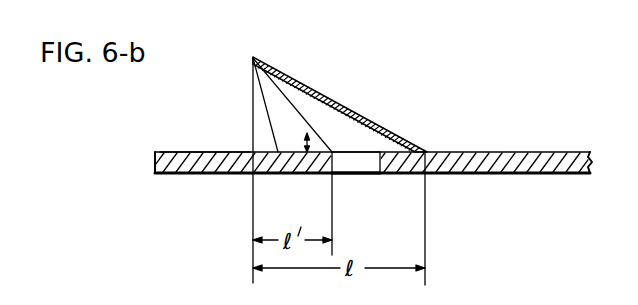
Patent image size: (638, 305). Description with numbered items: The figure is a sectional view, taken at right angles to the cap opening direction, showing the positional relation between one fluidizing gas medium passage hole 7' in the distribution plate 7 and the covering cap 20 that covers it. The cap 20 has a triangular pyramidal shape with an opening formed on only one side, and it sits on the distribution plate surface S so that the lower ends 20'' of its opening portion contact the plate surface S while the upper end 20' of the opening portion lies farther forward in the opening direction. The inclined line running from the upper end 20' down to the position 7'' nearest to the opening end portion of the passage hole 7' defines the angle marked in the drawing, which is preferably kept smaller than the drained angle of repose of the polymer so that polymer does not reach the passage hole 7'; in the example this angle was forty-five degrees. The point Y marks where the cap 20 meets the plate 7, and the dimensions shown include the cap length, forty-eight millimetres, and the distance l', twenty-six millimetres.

The distribution plate 7 is at (351, 164).
The fluidizing gas medium passage hole 7' is at (367, 195).
The position nearest to the opening end portion of the passage hole 7'' is at (363, 127).
The covering cap 20 is at (340, 104).
The upper end of the opening portion of the cap 20' is at (231, 148).
The lower ends of the opening portion of the cap 20'' is at (240, 105).
The distribution plate surface S is at (193, 151).
The lower contact point of blade Y is at (357, 152).